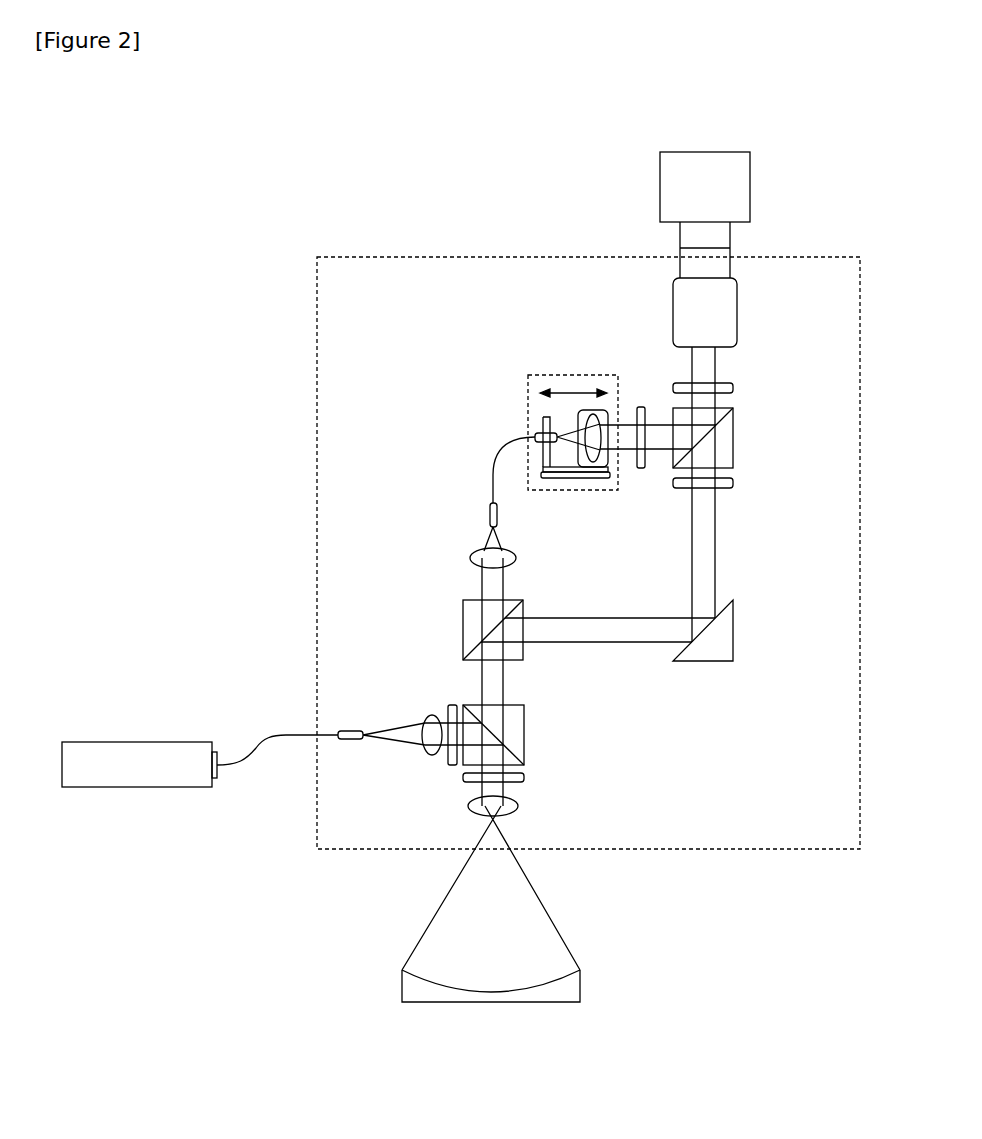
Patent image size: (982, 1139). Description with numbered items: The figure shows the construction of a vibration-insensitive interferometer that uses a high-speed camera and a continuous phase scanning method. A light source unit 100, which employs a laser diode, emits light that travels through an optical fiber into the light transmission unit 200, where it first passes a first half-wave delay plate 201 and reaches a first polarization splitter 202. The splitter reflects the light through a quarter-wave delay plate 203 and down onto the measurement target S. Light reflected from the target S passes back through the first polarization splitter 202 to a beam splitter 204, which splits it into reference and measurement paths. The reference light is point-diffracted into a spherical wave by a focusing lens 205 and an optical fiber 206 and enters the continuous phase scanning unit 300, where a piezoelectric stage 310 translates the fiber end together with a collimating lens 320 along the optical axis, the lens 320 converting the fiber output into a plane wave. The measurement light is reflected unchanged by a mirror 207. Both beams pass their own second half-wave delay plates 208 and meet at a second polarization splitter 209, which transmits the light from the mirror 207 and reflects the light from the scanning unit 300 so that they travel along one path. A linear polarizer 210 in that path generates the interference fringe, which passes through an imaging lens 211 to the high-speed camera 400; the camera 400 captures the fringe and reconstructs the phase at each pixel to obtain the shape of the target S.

The light source unit 100 is at (135, 742).
The light transmission unit 200 is at (412, 257).
The first λ/2 delay plate 201 is at (451, 766).
The first polarization splitter 202 is at (525, 735).
The λ/4 delay plate 203 is at (525, 778).
The beam splitter 204 is at (463, 630).
The focusing lens 205 is at (470, 558).
The optical fiber 206 is at (493, 475).
The mirror 207 is at (733, 636).
The second λ/2 delay plate 208 is at (641, 407).
The second polarization splitter 209 is at (733, 437).
The linear polarizer 210 is at (733, 388).
The imaging lens 211 is at (737, 313).
The continuous phase scanning unit 300 is at (548, 375).
The stage 310 is at (578, 480).
The collimating lens 320 is at (578, 420).
The high-speed camera 400 is at (705, 152).
The measurement target S is at (493, 1003).